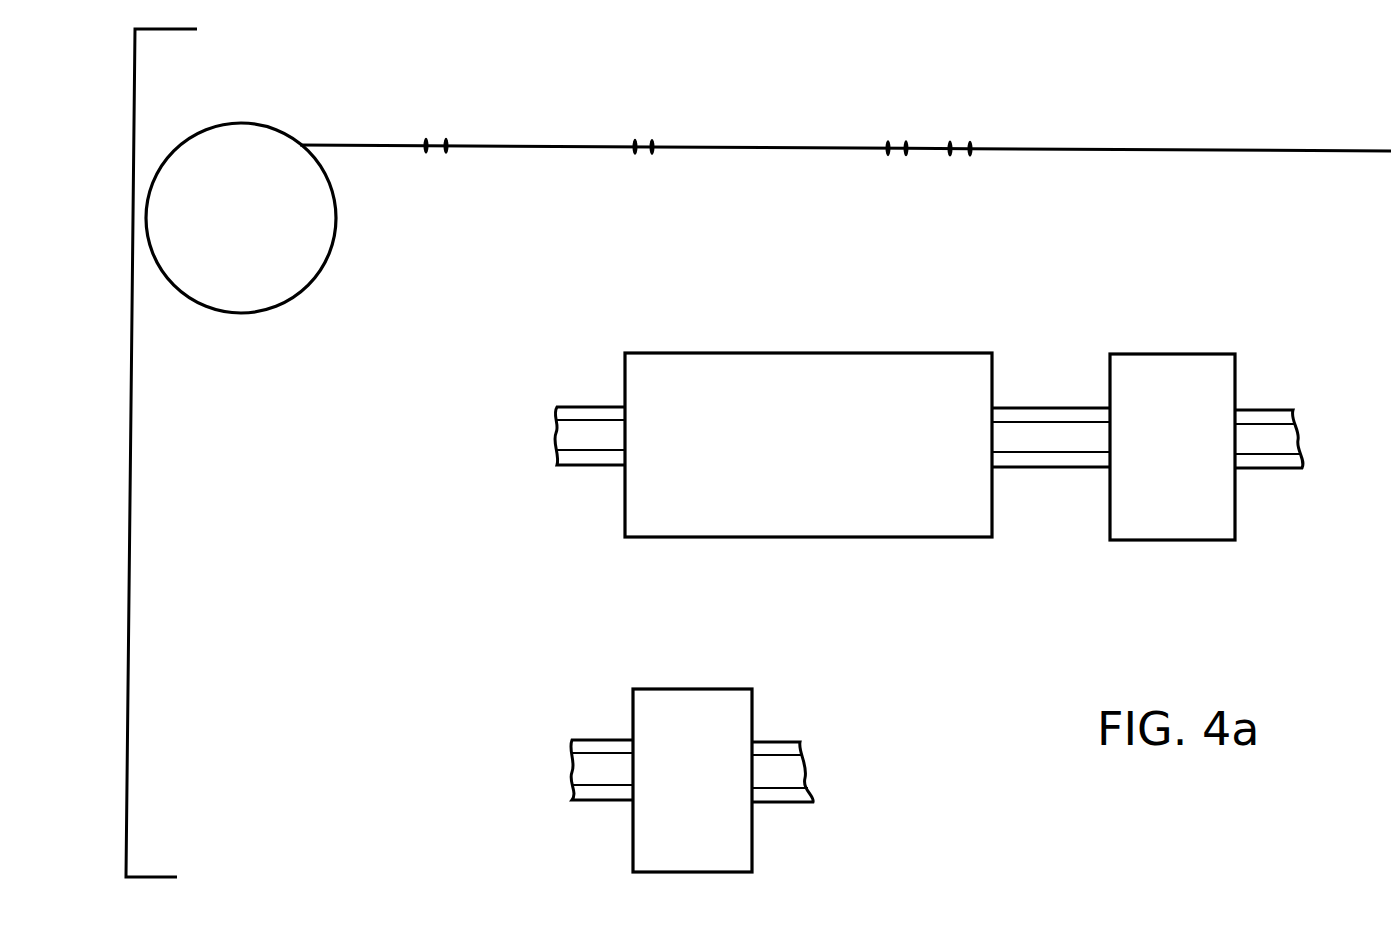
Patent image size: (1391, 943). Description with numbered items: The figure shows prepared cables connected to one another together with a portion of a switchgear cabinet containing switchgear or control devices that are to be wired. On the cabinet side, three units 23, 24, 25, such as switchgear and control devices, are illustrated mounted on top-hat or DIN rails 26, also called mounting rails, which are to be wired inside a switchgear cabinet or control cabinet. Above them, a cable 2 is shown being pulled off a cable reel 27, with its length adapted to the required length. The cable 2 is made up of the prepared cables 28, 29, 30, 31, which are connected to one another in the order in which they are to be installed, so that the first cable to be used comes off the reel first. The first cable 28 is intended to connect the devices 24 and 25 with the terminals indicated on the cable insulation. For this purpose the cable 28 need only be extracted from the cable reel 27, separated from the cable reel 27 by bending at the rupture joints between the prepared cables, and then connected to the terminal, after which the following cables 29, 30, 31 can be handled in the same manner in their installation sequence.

The cable 2 is at (388, 145).
The unit 23 is at (912, 368).
The unit 24 is at (1207, 371).
The unit 25 is at (706, 705).
The top-hat or DIN rail 26 is at (1284, 434).
The cable reel 27 is at (305, 254).
The prepared cable 28 is at (1220, 150).
The prepared cable 29 is at (940, 148).
The prepared cable 30 is at (819, 148).
The prepared cable 31 is at (556, 146).